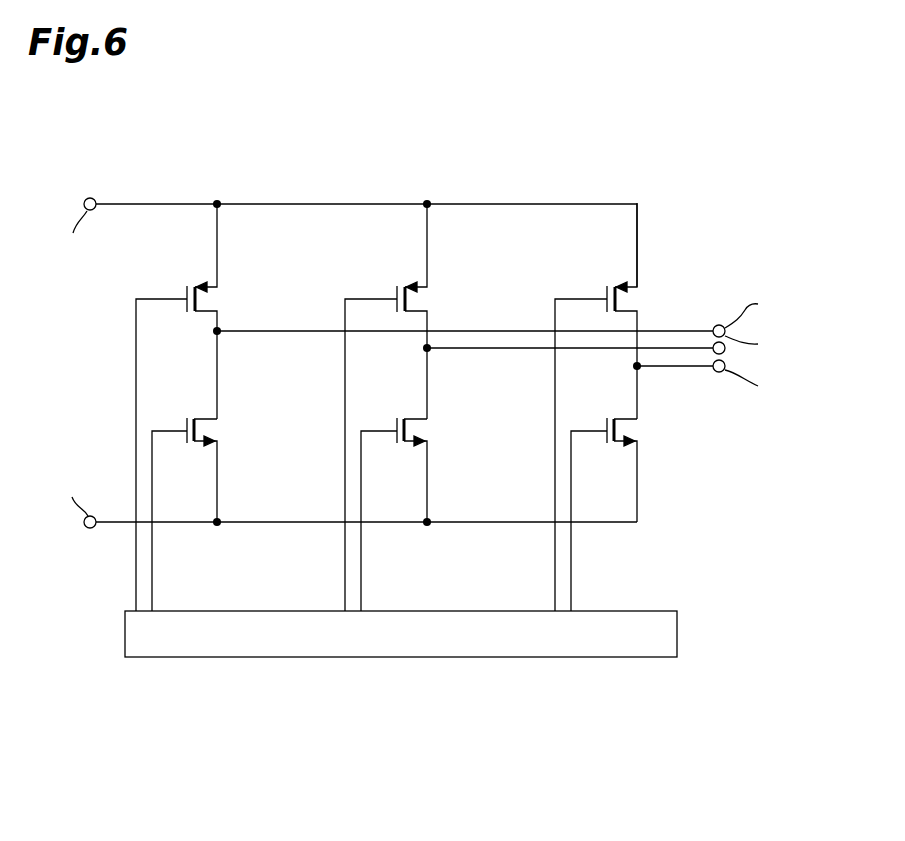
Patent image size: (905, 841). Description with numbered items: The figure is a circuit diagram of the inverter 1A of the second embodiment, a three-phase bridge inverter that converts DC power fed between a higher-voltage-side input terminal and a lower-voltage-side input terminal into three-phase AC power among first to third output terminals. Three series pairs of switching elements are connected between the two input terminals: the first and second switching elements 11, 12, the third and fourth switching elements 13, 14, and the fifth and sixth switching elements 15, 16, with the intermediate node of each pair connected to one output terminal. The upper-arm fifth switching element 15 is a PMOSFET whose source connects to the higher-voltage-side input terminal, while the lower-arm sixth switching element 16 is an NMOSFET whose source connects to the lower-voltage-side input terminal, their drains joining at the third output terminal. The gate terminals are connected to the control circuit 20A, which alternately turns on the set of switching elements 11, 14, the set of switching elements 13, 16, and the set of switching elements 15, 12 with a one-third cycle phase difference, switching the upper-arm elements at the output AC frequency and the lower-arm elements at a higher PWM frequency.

The inverter 1A is at (624, 175).
The first switching element 11 is at (185, 292).
The second switching element 12 is at (185, 423).
The third switching element 13 is at (395, 292).
The fourth switching element 14 is at (395, 423).
The fifth switching element 15 is at (605, 292).
The sixth switching element 16 is at (605, 423).
The control circuit 20A is at (513, 657).